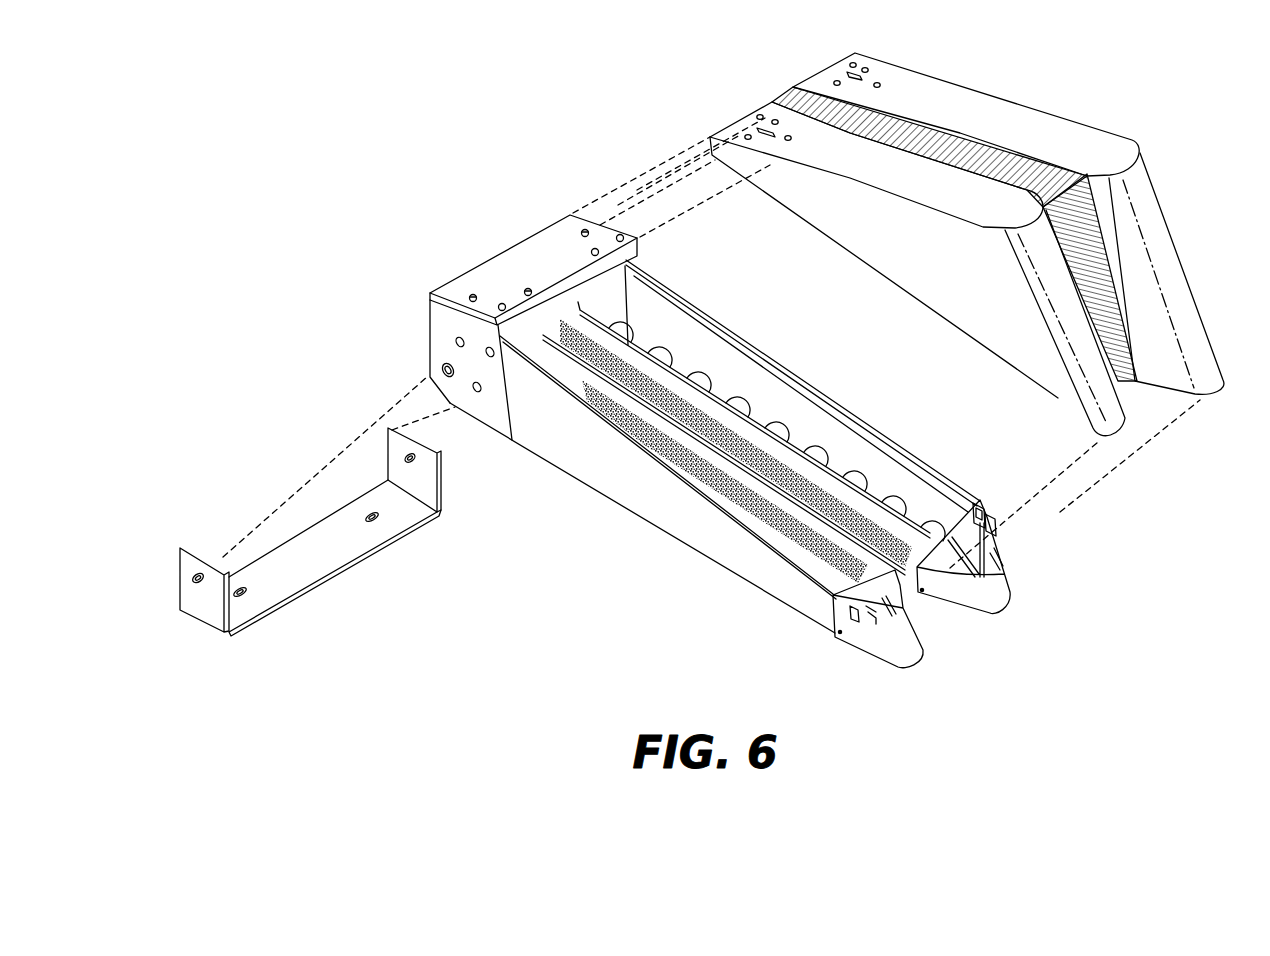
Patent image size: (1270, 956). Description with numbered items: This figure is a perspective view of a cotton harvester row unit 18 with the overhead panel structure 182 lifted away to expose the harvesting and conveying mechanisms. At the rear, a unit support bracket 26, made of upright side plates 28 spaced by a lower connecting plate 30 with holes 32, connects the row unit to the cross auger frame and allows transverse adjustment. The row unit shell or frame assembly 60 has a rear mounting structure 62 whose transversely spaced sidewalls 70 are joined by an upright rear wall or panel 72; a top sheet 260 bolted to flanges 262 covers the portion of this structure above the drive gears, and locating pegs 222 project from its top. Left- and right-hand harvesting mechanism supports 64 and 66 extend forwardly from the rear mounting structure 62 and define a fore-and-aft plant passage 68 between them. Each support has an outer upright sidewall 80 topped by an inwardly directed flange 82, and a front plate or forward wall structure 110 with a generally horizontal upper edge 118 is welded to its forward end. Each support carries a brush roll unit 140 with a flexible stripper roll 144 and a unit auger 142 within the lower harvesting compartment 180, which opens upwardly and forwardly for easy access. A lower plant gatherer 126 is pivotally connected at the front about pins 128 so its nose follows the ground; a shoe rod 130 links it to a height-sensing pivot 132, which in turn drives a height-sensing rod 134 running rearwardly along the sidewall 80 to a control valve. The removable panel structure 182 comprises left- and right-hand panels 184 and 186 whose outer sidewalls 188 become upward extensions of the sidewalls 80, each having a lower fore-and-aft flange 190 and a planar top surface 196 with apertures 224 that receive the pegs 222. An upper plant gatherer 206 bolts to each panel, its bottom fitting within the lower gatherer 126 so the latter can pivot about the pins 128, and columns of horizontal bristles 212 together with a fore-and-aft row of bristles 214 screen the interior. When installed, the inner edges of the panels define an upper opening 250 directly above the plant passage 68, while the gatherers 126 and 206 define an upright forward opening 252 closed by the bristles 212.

The row unit 18 is at (429, 122).
The unit support bracket 26 is at (222, 650).
The upright side plates 28 is at (441, 497).
The lower connecting plate 30 is at (330, 566).
The holes 32 is at (243, 588).
The row unit shell or frame assembly 60 is at (643, 537).
The rear wall or mounting structure 62 is at (488, 445).
The left-hand side structure or harvesting mechanism support 64 is at (823, 397).
The right-hand side structure or harvesting mechanism support 66 is at (722, 565).
The plant passage 68 is at (942, 620).
The sidewalls 70 is at (428, 326).
The rear wall or panel 72 is at (585, 306).
The outer upright sidewalls 80 is at (653, 349).
The inwardly directed flange 82 is at (690, 296).
The front plate or forward wall structure 110 is at (973, 510).
The upper edge 118 is at (947, 530).
The plant gatherer 126 is at (1010, 584).
The pins 128 is at (838, 639).
The shoe rod 130 is at (973, 548).
The height-sensing pivot 132 is at (987, 518).
The height-sensing rod 134 is at (887, 452).
The brush roll unit 140 is at (594, 352).
The unit auger 142 is at (714, 386).
The flexible stripper roll 144 is at (733, 415).
The lower harvesting compartment 180 is at (704, 345).
The removable overhead panel structure 182 is at (1180, 130).
The left-hand panel 184 is at (987, 92).
The right-hand panel 186 is at (908, 206).
The outer sidewalls 188 is at (927, 270).
The fore-and-aft extending flange 190 is at (963, 160).
The top surface 196 is at (897, 108).
The upper plant gatherer 206 is at (1036, 303).
The bristles 212 is at (1075, 185).
The row of bristles 214 is at (940, 135).
The locating pegs 222 is at (617, 240).
The apertures 224 is at (850, 66).
The upper fore-and-aft extending opening 250 is at (772, 96).
The upright forward opening 252 is at (1127, 394).
The top sheet 260 is at (517, 253).
The flanges 262 is at (570, 219).